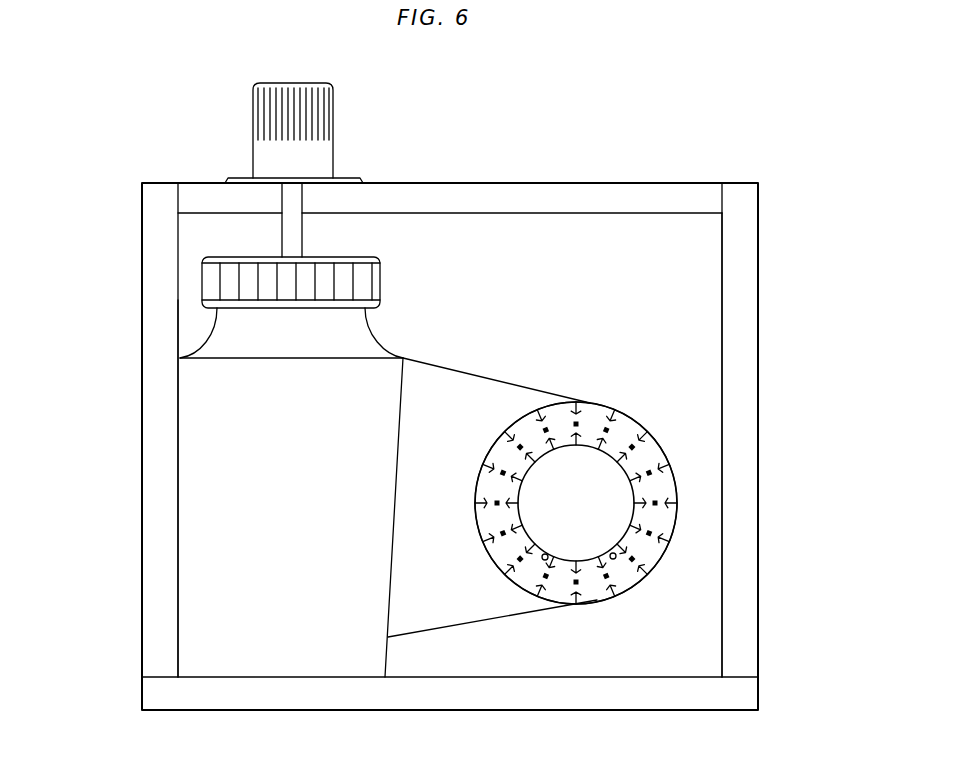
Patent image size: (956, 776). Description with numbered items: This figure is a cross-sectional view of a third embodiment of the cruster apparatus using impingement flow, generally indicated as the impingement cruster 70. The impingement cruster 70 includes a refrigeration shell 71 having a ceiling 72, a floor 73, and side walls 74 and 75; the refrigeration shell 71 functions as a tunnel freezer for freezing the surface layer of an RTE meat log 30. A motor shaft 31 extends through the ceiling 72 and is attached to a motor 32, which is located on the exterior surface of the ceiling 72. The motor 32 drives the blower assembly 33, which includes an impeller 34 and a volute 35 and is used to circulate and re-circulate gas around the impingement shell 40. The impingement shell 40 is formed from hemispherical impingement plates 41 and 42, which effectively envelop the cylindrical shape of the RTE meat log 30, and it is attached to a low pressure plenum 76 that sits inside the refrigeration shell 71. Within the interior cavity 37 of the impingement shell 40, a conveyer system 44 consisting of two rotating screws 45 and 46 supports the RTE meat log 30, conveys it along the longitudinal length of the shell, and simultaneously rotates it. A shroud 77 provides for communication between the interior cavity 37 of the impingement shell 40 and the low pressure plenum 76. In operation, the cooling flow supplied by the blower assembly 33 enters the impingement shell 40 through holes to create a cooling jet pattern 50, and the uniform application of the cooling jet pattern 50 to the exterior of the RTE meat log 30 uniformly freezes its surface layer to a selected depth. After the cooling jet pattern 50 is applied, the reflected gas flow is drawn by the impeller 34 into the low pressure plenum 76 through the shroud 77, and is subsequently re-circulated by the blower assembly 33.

The impingement cruster 70 is at (108, 170).
The refrigeration shell 71 is at (532, 178).
The ceiling 72 is at (667, 195).
The floor 73 is at (625, 693).
The side wall 74 is at (152, 380).
The side wall 75 is at (738, 257).
The low pressure plenum 76 is at (210, 477).
The shroud 77 is at (448, 603).
The RTE meat log 30 is at (492, 458).
The motor shaft 31 is at (292, 225).
The motor 32 is at (273, 155).
The blower assembly 33 is at (192, 311).
The impeller 34 is at (213, 283).
The volute 35 is at (232, 338).
The interior cavity 37 is at (612, 420).
The impingement shell 40 is at (684, 480).
The hemispherical impingement plate 41 is at (642, 422).
The hemispherical impingement plate 42 is at (658, 565).
The conveyer system 44 is at (530, 552).
The rotating screw 45 is at (545, 561).
The rotating screw 46 is at (614, 559).
The cooling jet pattern 50 is at (683, 522).